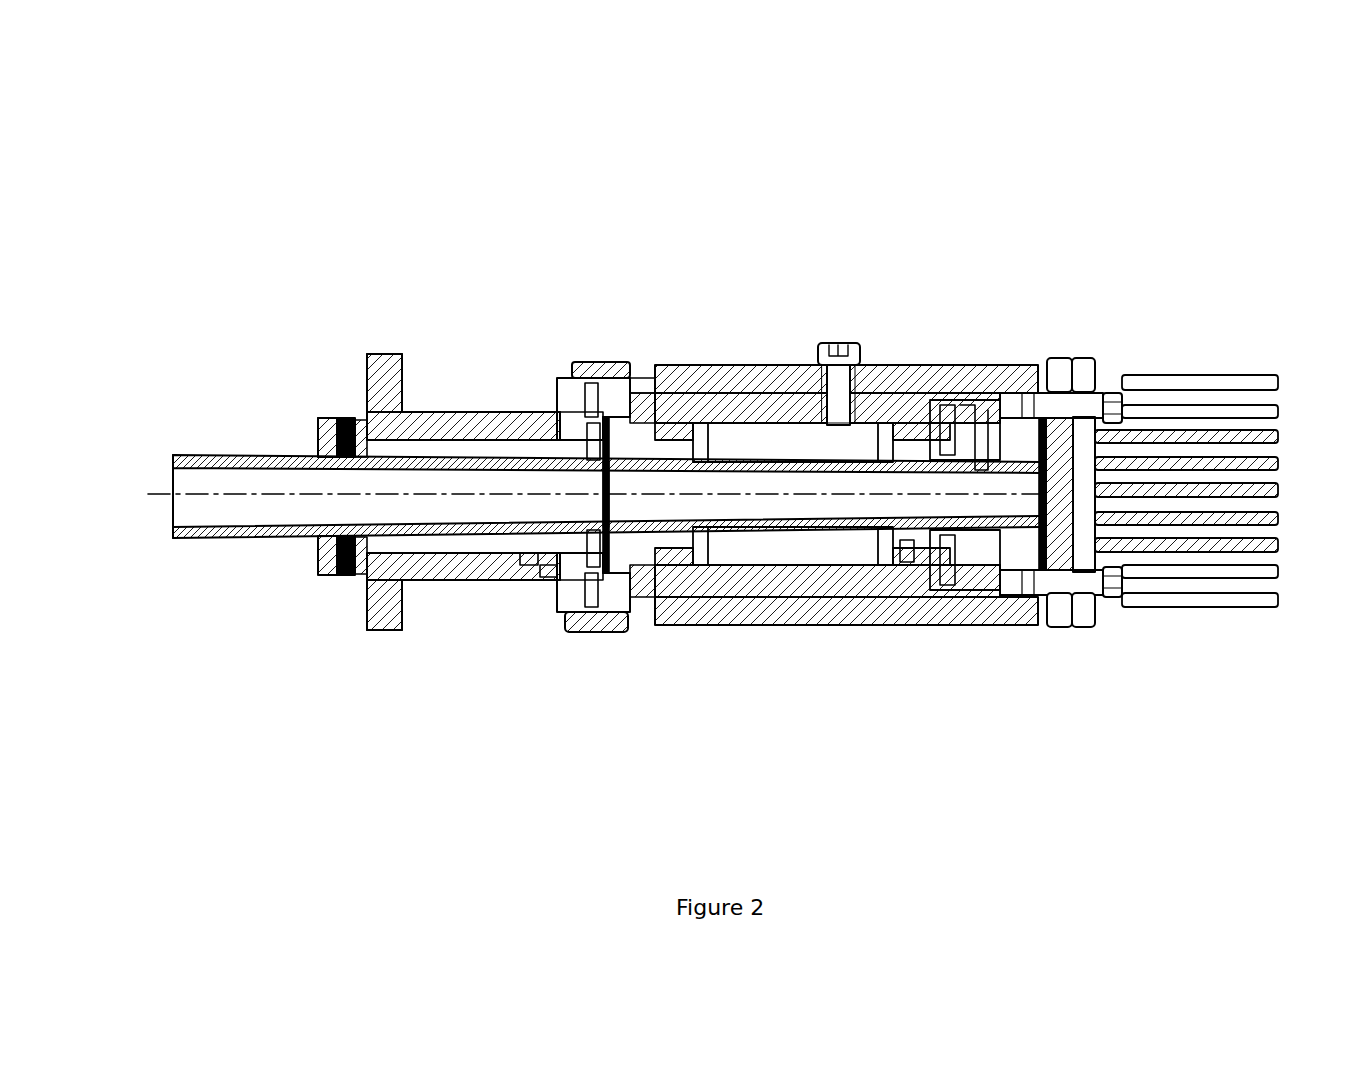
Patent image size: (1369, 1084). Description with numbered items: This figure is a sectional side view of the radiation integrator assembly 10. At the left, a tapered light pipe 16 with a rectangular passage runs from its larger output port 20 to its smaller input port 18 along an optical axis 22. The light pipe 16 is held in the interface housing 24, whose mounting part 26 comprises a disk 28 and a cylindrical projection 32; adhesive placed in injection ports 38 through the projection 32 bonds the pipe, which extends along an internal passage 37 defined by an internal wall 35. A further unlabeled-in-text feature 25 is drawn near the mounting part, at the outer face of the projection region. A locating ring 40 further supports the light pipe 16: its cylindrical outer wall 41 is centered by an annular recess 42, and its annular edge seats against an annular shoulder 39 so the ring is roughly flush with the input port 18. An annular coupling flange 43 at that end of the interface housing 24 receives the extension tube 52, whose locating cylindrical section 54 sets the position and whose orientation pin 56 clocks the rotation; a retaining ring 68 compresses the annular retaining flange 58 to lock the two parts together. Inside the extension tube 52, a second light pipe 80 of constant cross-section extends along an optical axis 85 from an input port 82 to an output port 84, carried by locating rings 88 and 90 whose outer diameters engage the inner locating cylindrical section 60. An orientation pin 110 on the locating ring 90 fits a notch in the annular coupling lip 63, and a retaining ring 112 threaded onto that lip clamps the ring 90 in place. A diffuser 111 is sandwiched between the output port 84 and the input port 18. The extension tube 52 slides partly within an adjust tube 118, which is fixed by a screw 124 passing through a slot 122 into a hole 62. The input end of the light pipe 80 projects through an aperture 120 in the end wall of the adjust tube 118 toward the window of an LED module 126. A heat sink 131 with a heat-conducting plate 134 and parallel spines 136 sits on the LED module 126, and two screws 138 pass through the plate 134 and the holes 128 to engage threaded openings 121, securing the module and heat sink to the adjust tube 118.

The radiation integrator assembly 10 is at (504, 193).
The light pipe 16 is at (236, 540).
The input port 18 is at (592, 508).
The output port 20 is at (166, 505).
The optical axis 22 is at (256, 490).
The interface housing 24 is at (428, 600).
The retainer face 25 is at (316, 430).
The mounting part 26 is at (385, 350).
The disk 28 is at (385, 628).
The cylindrical projection 32 is at (322, 572).
The internal wall 35 is at (437, 438).
The internal passage 37 is at (460, 582).
The injection ports 38 is at (341, 416).
The annular shoulder 39 is at (530, 567).
The locating ring 40 is at (567, 410).
The cylindrical outer wall 41 is at (546, 578).
The annular recess 42 is at (548, 432).
The annular coupling flange 43 is at (570, 582).
The extension tube 52 is at (765, 628).
The locating cylindrical section 54 is at (590, 634).
The orientation pin 56 is at (578, 392).
The annular retaining flange 58 is at (622, 600).
The inner locating cylindrical section 60 is at (748, 392).
The hole 62 is at (790, 392).
The annular coupling lip 63 is at (925, 628).
The retaining ring 68 is at (625, 376).
The light pipe 80 is at (832, 568).
The input port 82 is at (1033, 512).
The output port 84 is at (620, 508).
The optical axis 85 is at (800, 548).
The locating ring 88 is at (672, 392).
The locating ring 90 is at (906, 565).
The orientation pin 110 is at (935, 398).
The diffuser 111 is at (600, 390).
The retaining ring 112 is at (965, 592).
The adjust tube 118 is at (985, 398).
The aperture 120 is at (1012, 392).
The threaded openings 121 is at (1028, 392).
The slot 122 is at (856, 365).
The screw 124 is at (830, 343).
The LED module 126 is at (1057, 358).
The cylindrical holes 128 is at (1088, 395).
The heat sink 131 is at (1170, 362).
The heat-conducting plate 134 is at (1082, 358).
The spines 136 is at (1283, 568).
The screws 138 is at (1118, 392).